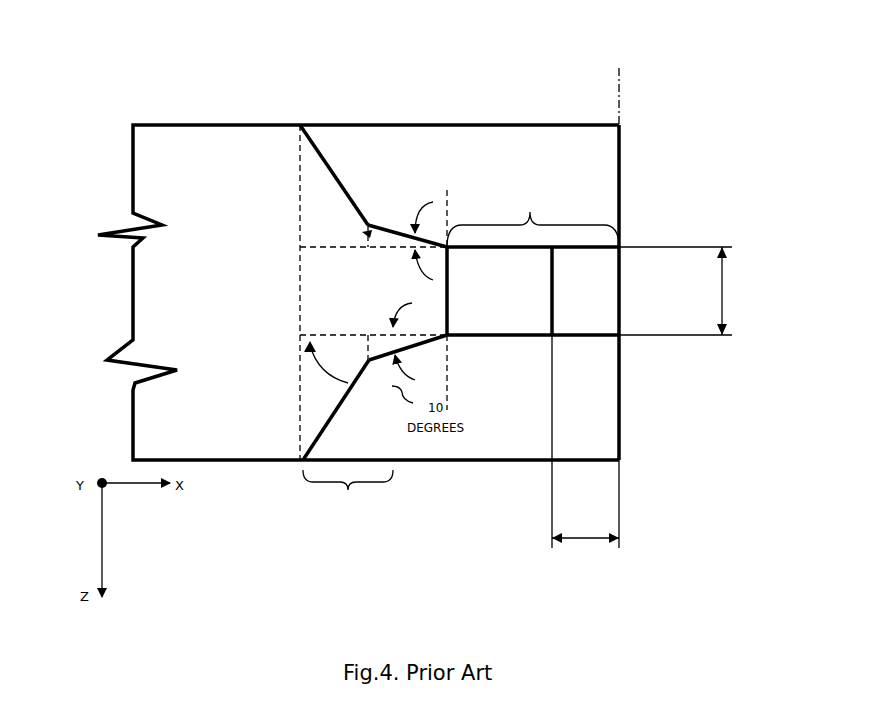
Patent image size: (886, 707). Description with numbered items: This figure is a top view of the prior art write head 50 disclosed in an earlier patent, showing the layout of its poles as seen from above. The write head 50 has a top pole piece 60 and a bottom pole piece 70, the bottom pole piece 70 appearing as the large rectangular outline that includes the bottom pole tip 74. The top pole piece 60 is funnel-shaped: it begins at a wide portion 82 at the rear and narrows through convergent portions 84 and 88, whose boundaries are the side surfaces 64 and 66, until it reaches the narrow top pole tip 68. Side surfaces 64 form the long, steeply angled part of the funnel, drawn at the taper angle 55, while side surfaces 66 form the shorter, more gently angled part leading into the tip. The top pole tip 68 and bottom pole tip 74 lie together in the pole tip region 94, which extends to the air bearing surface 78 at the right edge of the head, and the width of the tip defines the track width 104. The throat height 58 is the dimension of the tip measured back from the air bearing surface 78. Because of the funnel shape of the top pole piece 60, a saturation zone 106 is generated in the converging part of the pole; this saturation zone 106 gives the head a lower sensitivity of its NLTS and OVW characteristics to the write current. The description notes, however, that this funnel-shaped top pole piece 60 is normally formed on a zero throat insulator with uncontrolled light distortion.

The write head 50 is at (749, 142).
The taper angle (55 degrees) 55 is at (350, 382).
The throat height 58 is at (585, 540).
The top pole piece 60 is at (619, 336).
The side surface 64 is at (323, 157).
The side surface 66 is at (390, 227).
The top pole tip 68 is at (619, 305).
The bottom pole piece 70 is at (585, 412).
The bottom pole tip 74 is at (573, 291).
The air bearing surface (ABS) 78 is at (619, 110).
The wide portion 82 is at (280, 135).
The convergent portion 84 is at (312, 180).
The convergent portion 88 is at (390, 280).
The pole tip region 94 is at (530, 212).
The track width 104 is at (722, 292).
The saturation zone 106 is at (348, 523).